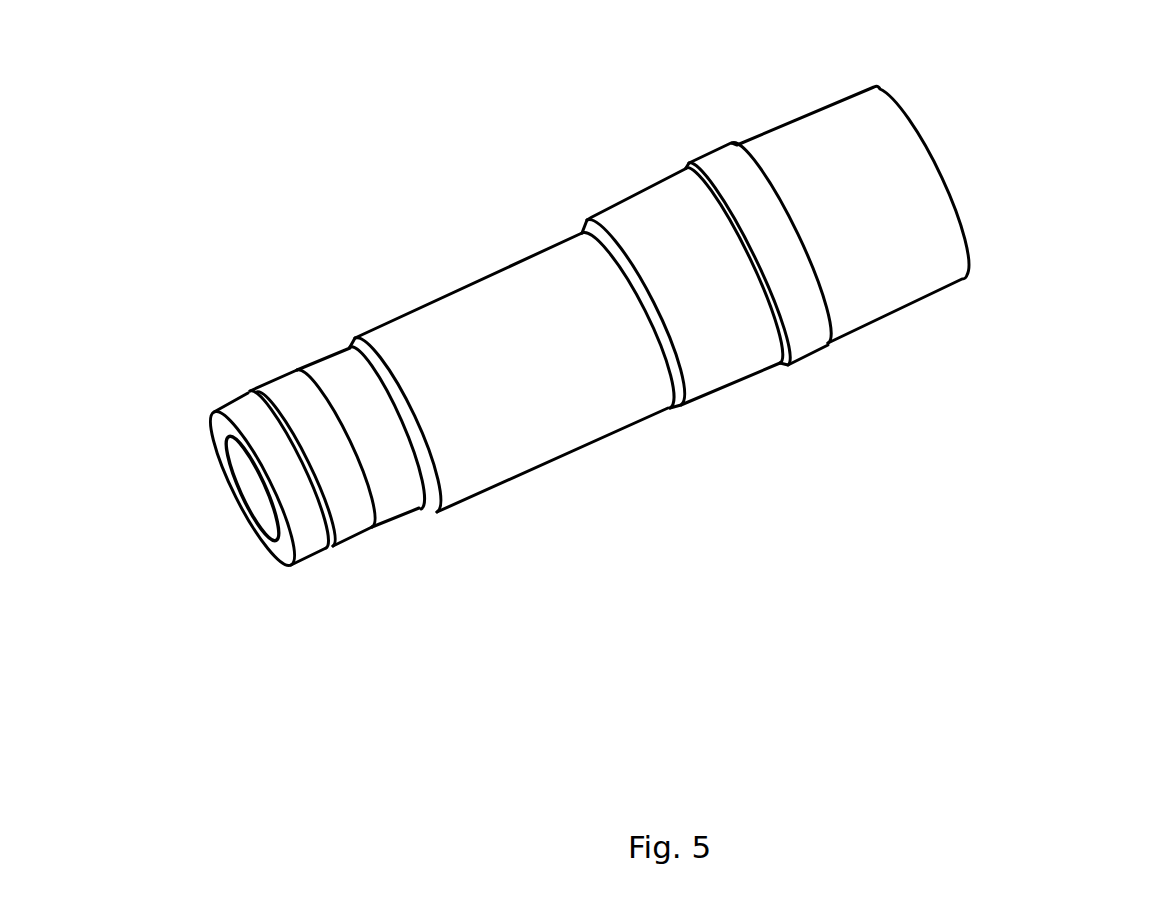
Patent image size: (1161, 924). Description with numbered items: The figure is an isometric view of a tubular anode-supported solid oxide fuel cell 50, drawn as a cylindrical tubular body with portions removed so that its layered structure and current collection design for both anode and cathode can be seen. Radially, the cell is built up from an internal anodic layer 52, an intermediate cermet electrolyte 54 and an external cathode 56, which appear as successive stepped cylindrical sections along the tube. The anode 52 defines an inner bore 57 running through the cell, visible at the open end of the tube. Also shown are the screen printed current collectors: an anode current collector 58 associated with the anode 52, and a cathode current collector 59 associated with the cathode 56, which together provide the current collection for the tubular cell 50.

The tubular anode-supported solid oxide fuel cell 50 is at (824, 516).
The internal anodic layer 52 is at (242, 410).
The intermediate cermet electrolyte 54 is at (582, 412).
The external cathode 56 is at (668, 203).
The inner bore 57 is at (257, 488).
The anode current collector 58 is at (350, 515).
The cathode current collector 59 is at (805, 340).